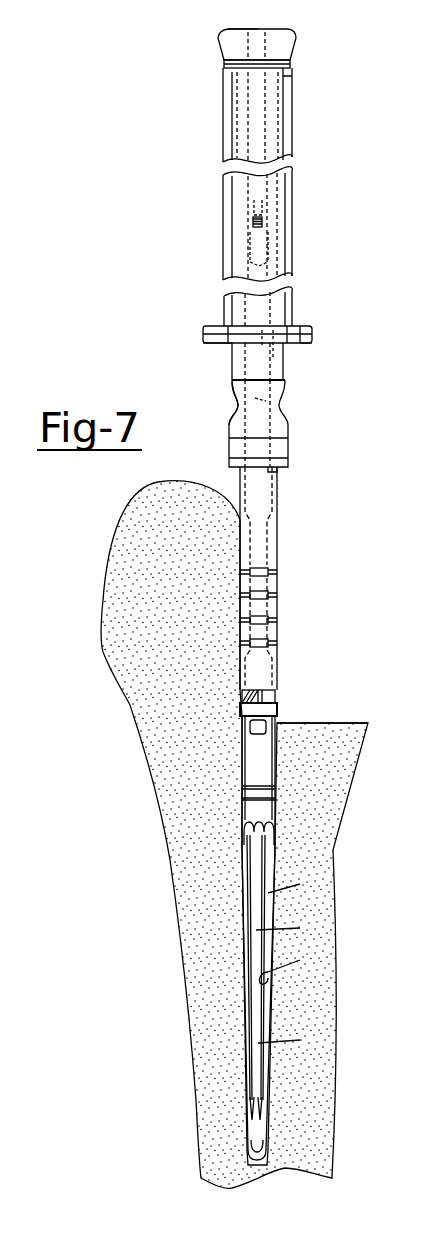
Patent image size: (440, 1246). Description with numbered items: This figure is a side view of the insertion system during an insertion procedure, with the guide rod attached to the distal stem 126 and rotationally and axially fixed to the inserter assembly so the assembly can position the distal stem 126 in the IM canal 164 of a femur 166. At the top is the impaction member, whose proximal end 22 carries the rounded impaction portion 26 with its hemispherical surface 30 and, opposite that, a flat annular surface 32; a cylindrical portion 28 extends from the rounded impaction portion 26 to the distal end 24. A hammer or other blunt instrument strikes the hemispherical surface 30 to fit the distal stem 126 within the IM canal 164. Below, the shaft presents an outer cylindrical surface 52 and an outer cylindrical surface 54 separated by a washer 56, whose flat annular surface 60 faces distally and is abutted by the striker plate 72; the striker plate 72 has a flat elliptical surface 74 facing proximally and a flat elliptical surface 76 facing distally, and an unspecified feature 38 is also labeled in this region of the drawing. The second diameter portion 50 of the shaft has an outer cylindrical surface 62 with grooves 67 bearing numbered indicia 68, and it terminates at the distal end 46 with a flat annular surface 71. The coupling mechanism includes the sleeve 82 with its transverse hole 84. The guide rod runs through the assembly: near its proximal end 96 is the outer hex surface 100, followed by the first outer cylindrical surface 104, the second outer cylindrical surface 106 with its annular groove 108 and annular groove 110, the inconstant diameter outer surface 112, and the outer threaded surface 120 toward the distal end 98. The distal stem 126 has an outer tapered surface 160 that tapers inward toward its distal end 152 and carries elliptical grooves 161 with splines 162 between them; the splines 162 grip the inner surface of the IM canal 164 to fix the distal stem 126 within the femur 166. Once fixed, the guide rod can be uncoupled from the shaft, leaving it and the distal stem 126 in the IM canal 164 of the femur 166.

The proximal end 22 is at (294, 31).
The hemispherical surface 30 is at (226, 30).
The rounded impaction portion 26 is at (224, 50).
The flat annular surface 32 is at (285, 76).
The cylindrical portion 28 is at (250, 76).
The proximal end 96 is at (262, 222).
The outer hex surface 100 is at (253, 222).
The first outer cylindrical surface 104 is at (250, 252).
The distal end 24 is at (250, 264).
The outer cylindrical surface 52 is at (288, 256).
The flat elliptical surface 74 is at (300, 326).
The washer 56 is at (224, 322).
The striker plate 72 is at (204, 331).
The flat elliptical surface 76 is at (222, 343).
The flat annular surface 60 is at (300, 343).
The outer cylindrical surface 54 is at (232, 360).
The bore 38 is at (262, 345).
The sleeve 82 is at (288, 383).
The hole 84 is at (237, 405).
The second outer cylindrical surface 106 is at (266, 400).
The annular groove 108 is at (278, 437).
The annular groove 110 is at (280, 470).
The outer cylindrical surface 62 is at (240, 516).
The second diameter portion 50 is at (239, 544).
The inconstant diameter outer surface 112 is at (257, 556).
The numbered indicia 68 is at (250, 643).
The grooves 67 is at (272, 643).
The flat annular surface 71 is at (276, 692).
The distal end 46 is at (240, 706).
The distal end 98 is at (258, 735).
The outer threaded surface 120 is at (278, 728).
The distal stem 126 is at (237, 805).
The outer tapered surface 160 is at (300, 884).
The elliptical grooves 161 is at (300, 928).
The IM canal 164 is at (300, 960).
The femur 166 is at (325, 992).
The splines 162 is at (300, 1040).
The distal end 152 is at (258, 1162).